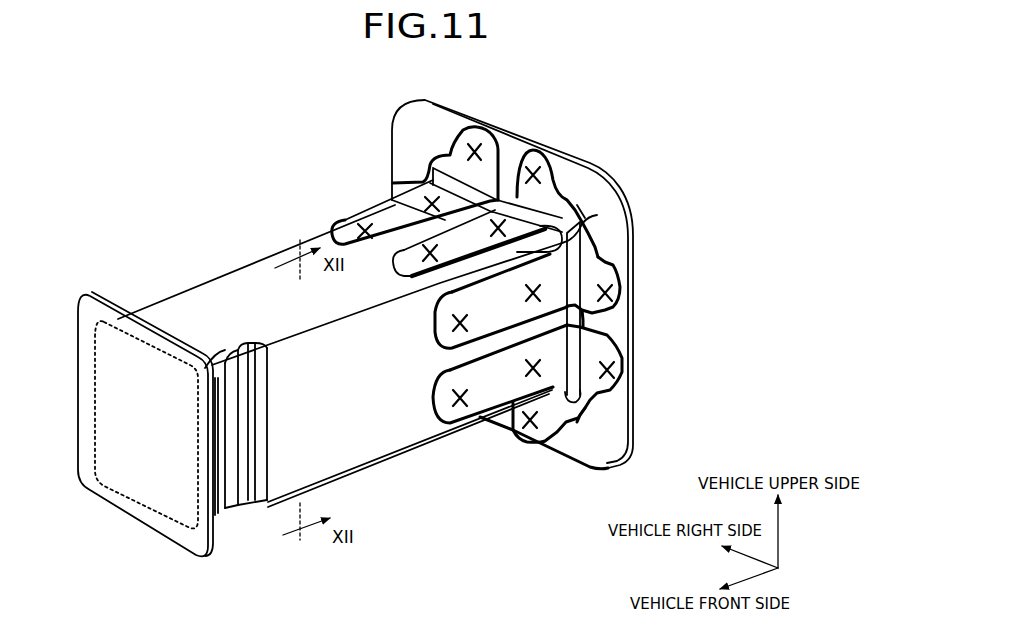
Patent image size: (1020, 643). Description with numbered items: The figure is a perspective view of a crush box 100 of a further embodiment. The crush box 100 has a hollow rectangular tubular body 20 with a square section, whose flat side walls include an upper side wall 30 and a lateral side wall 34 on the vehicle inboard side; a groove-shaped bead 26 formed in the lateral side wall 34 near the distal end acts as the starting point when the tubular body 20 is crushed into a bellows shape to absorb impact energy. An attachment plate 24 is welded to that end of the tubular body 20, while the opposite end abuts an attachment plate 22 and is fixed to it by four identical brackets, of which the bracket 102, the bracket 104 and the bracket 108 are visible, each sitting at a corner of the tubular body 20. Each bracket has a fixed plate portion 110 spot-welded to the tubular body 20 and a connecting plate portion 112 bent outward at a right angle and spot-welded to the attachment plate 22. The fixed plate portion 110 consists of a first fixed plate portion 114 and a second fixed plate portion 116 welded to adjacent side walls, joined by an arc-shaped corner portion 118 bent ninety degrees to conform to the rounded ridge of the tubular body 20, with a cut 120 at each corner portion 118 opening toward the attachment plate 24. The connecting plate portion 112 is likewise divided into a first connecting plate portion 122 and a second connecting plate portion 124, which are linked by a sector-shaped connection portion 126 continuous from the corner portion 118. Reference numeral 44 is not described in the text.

The tubular body 20 is at (340, 376).
The attachment plate 22 is at (440, 116).
The attachment plate 24 is at (137, 511).
The bead 26 is at (248, 473).
The upper side wall 30 is at (223, 295).
The lateral side wall 34 is at (334, 443).
The weld tab 44 is at (342, 222).
The crush box 100 is at (196, 150).
The bracket 102 is at (598, 198).
The bracket 104 is at (563, 441).
The bracket 108 is at (416, 157).
The fixed plate portion 110 is at (432, 350).
The connecting plate portion 112 is at (517, 136).
The first fixed plate portion 114 is at (481, 249).
The second fixed plate portion 116 is at (416, 225).
The corner portion 118 is at (583, 213).
The cut 120 is at (540, 253).
The first connecting plate portion 122 is at (535, 166).
The second connecting plate portion 124 is at (613, 298).
The connection portion 126 is at (582, 210).